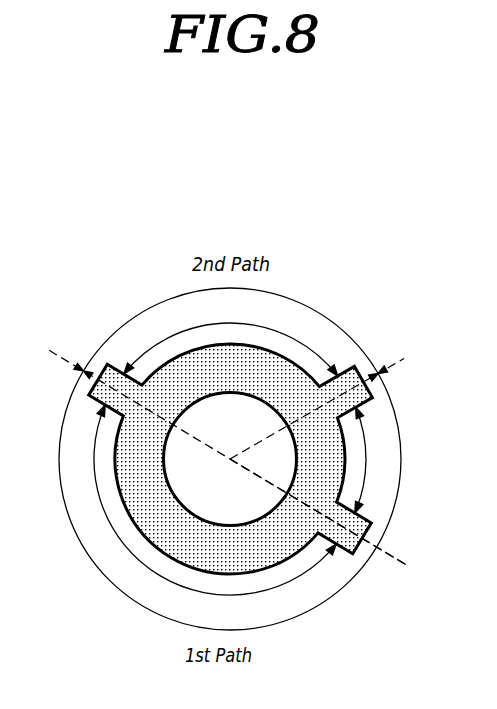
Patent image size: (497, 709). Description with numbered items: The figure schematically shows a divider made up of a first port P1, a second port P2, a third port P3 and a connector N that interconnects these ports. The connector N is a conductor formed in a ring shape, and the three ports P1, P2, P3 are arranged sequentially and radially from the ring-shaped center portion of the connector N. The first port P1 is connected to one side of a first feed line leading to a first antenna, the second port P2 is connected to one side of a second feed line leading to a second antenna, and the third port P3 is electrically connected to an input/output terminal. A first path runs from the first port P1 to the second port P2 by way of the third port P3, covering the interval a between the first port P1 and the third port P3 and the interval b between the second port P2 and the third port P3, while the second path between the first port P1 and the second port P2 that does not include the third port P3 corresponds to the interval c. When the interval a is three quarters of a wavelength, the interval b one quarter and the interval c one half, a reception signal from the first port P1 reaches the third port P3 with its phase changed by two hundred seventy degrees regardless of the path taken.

The connector N is at (151, 502).
The first port P1 is at (214, 453).
The second port P2 is at (334, 400).
The third port P3 is at (335, 520).
The interval a is at (215, 502).
The interval b is at (369, 460).
The interval c is at (231, 336).